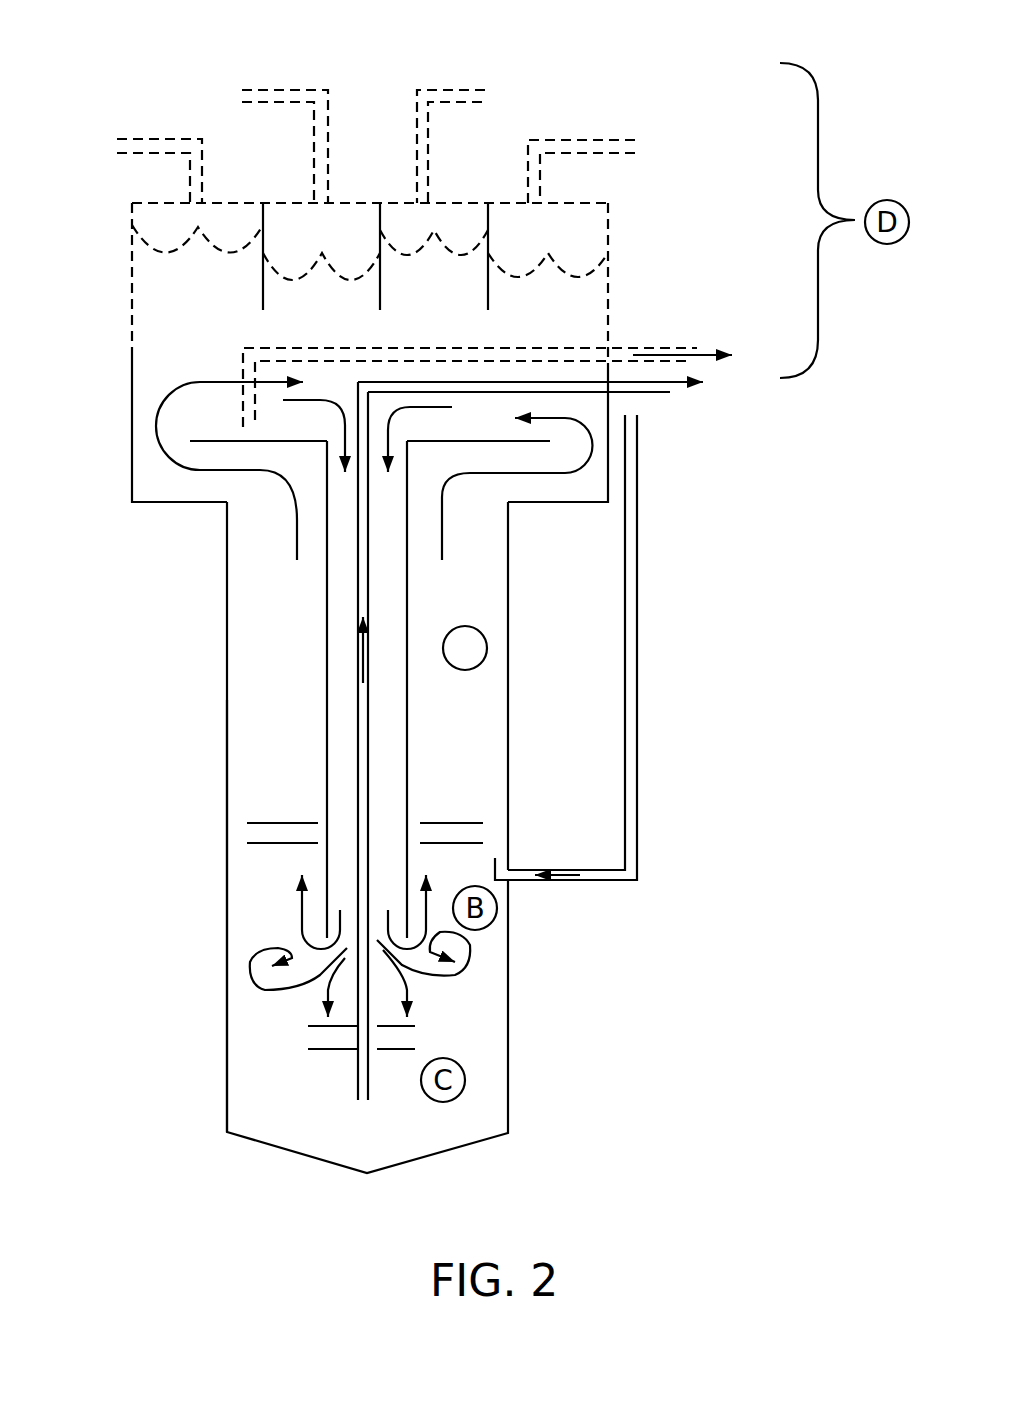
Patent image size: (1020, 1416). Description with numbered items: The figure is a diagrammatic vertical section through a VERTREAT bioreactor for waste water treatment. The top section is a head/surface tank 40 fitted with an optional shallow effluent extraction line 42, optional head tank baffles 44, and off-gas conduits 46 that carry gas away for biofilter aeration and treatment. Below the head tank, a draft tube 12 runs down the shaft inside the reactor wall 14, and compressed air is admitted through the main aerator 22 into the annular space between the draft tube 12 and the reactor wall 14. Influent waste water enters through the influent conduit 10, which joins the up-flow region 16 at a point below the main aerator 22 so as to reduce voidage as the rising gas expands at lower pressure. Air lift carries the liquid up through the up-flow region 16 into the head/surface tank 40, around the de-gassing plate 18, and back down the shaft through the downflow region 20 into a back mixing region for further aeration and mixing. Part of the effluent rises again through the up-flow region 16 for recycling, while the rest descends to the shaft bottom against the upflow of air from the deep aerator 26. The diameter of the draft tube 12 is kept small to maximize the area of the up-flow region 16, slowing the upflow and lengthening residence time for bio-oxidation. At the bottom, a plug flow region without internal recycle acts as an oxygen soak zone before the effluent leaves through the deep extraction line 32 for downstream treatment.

The influent conduit 10 is at (573, 882).
The draft tube 12 is at (327, 687).
The reactor wall 14 is at (226, 762).
The up-flow region 16 is at (373, 678).
The de-gassing plate 18 is at (505, 442).
The downflow region 20 is at (337, 605).
The main aerator 22 is at (277, 822).
The deep aerator 26 is at (332, 1052).
The deep extraction line 32 is at (370, 1065).
The head/surface tank 40 is at (130, 492).
The shallow effluent extraction line 42 is at (511, 383).
The head tank baffles 44 is at (263, 280).
The off-gas conduits 46 is at (463, 90).